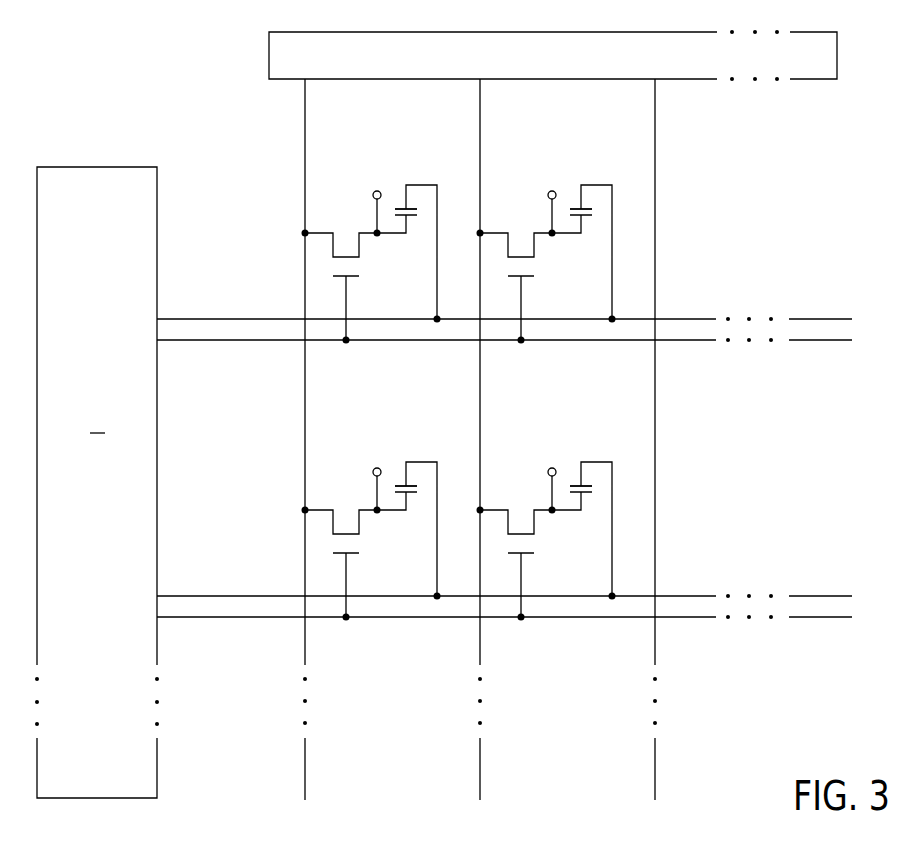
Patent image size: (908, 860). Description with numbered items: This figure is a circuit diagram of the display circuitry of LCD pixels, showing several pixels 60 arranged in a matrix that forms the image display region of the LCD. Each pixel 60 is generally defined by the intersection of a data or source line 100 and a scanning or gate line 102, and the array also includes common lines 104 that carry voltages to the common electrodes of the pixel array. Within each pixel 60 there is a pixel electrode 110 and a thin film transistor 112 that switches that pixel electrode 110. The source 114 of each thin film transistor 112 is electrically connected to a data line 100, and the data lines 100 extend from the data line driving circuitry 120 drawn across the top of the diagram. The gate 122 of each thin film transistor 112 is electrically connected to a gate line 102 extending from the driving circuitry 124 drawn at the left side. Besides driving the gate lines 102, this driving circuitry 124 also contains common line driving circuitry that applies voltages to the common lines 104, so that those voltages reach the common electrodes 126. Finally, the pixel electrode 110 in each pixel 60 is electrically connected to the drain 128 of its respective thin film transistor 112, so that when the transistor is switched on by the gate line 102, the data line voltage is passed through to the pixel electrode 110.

The pixel 60 is at (384, 263).
The data line 100 is at (305, 762).
The gate line 102 is at (822, 342).
The common line 104 is at (811, 318).
The pixel electrode 110 is at (460, 392).
The thin film transistor 112 is at (463, 462).
The source 114 is at (374, 335).
The data line driving circuitry 120 is at (630, 32).
The gate 122 is at (420, 502).
The driving circuitry 124 is at (137, 167).
The common electrode 126 is at (484, 312).
The drain 128 is at (440, 342).